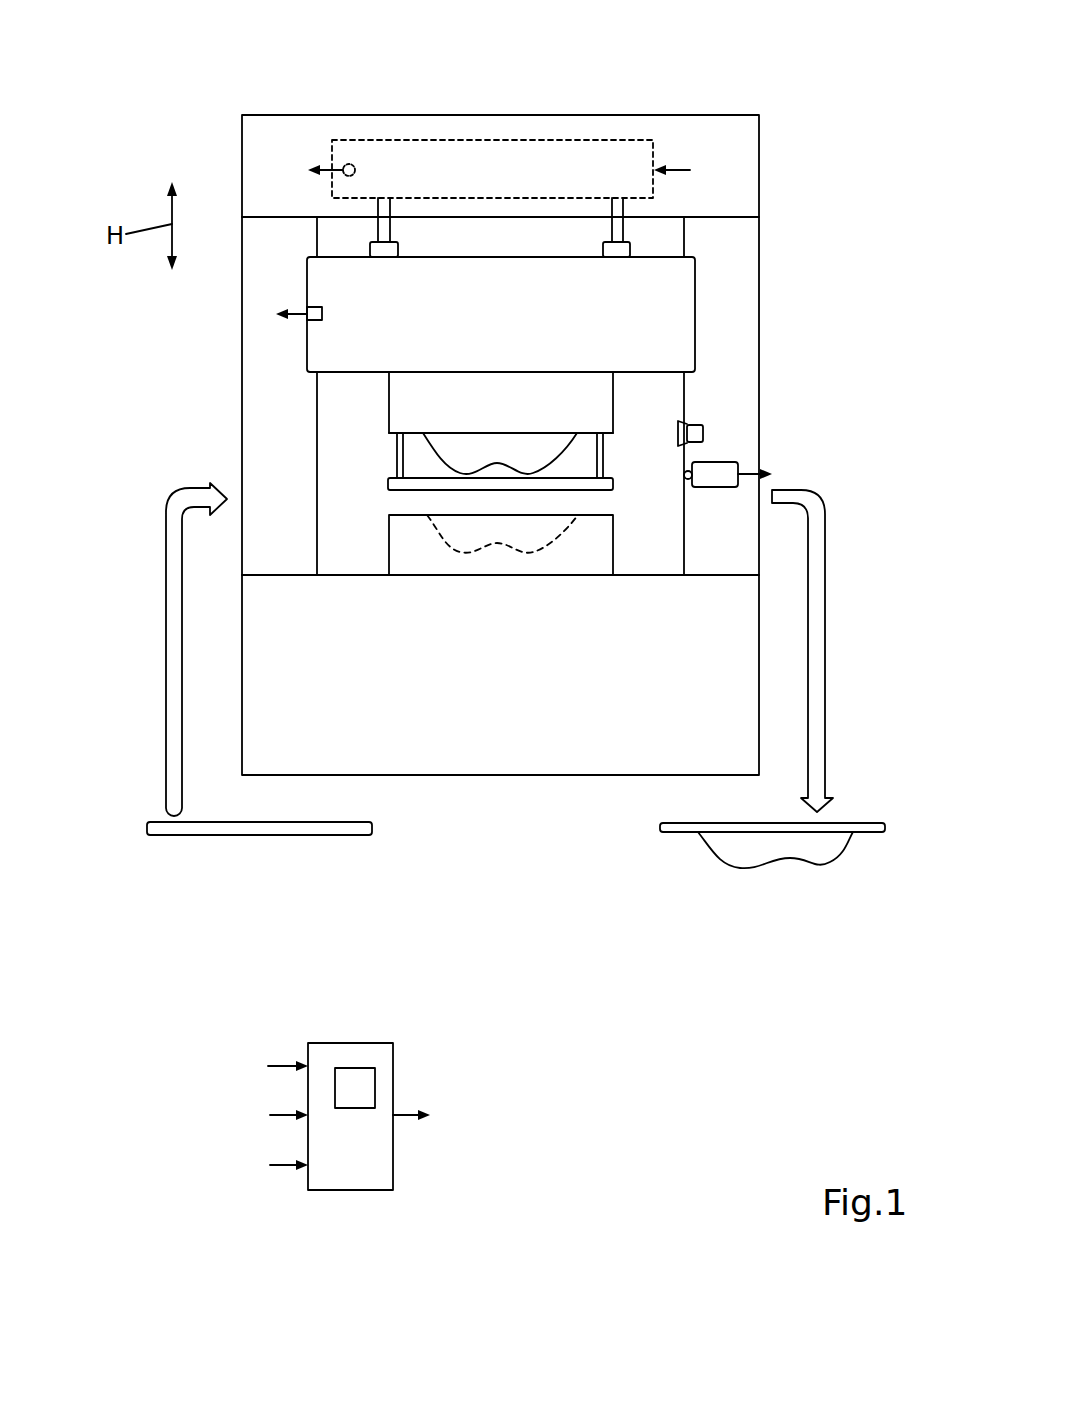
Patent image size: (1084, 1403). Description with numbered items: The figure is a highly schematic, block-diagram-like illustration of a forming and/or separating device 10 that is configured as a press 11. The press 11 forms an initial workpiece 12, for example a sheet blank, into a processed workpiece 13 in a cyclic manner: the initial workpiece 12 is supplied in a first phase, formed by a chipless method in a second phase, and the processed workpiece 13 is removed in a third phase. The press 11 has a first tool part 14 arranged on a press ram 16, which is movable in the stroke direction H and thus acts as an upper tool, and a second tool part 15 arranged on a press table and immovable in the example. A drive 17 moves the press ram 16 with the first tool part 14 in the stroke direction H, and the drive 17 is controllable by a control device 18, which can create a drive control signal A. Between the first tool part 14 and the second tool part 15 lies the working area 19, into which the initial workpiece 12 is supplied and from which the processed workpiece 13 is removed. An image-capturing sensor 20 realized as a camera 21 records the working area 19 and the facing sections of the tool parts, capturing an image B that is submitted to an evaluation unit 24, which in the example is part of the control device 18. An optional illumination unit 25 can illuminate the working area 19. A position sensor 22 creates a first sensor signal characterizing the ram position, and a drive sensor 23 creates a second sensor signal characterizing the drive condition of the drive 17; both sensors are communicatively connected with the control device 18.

The forming and/or separating device 10 is at (558, 395).
The press 11 is at (806, 82).
The initial workpiece 12 is at (208, 828).
The processed workpiece 13 is at (843, 845).
The first tool part 14 is at (400, 437).
The second tool part 15 is at (400, 532).
The press ram 16 is at (683, 305).
The drive 17 is at (492, 122).
The control device 18 is at (343, 1043).
The working area 19 is at (388, 496).
The image-capturing sensor 20 is at (779, 451).
The camera 21 is at (724, 468).
The position sensor 22 is at (307, 318).
The drive sensor 23 is at (353, 163).
The evaluation unit 24 is at (363, 1073).
The illumination unit 25 is at (703, 432).